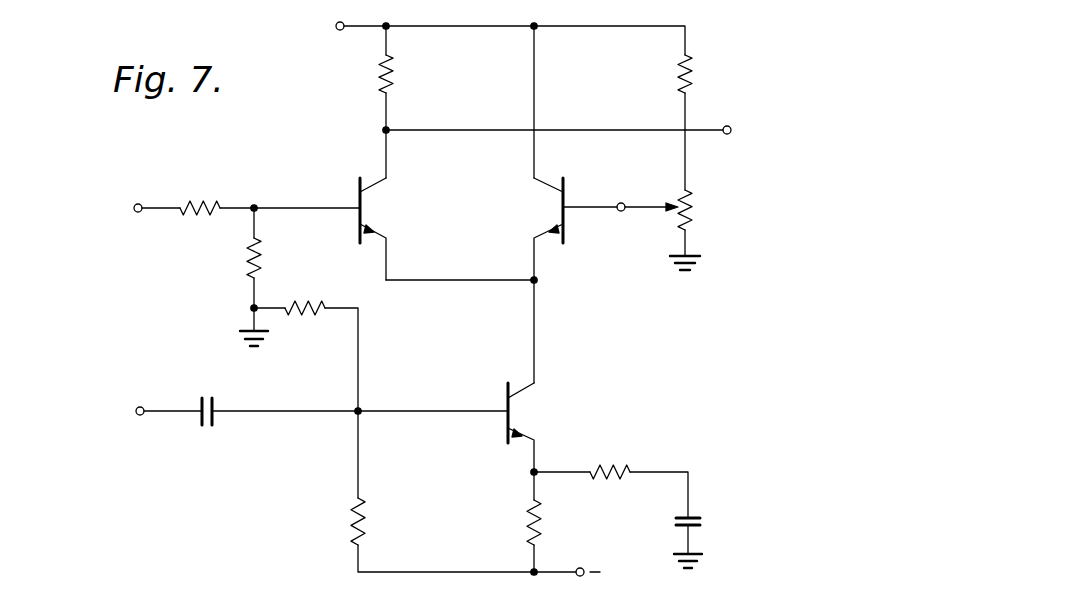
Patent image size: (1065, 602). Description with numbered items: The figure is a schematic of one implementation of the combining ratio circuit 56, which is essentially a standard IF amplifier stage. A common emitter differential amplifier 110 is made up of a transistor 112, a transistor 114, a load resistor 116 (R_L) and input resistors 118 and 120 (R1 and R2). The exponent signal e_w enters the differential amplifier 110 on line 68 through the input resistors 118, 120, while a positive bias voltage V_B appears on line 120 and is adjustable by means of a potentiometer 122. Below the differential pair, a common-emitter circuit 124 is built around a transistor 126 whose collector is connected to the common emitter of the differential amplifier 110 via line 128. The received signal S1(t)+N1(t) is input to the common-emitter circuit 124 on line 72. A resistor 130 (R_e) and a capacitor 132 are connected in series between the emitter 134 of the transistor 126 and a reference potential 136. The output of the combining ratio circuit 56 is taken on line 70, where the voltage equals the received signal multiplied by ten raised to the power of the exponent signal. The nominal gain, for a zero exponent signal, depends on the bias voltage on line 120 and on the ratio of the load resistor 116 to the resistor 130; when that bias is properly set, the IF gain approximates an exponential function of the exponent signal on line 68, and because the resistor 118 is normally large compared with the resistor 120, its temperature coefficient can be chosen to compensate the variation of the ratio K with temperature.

The combining ratio circuit 56 is at (716, 318).
The exponent signal input line 68 is at (167, 206).
The output line 70 is at (701, 128).
The received signal input line 72 is at (170, 410).
The common emitter differential amplifier 110 is at (561, 266).
The transistor 112 is at (372, 171).
The transistor 114 is at (549, 171).
The load resistor 116 is at (381, 84).
The input resistor 118 is at (206, 216).
The input resistor 120 is at (652, 212).
The potentiometer 122 is at (691, 215).
The common-emitter circuit 124 is at (559, 407).
The transistor 126 is at (518, 381).
The line 128 is at (534, 331).
The resistor 130 is at (600, 477).
The capacitor 132 is at (701, 518).
The emitter 134 is at (521, 441).
The reference potential 136 is at (701, 554).